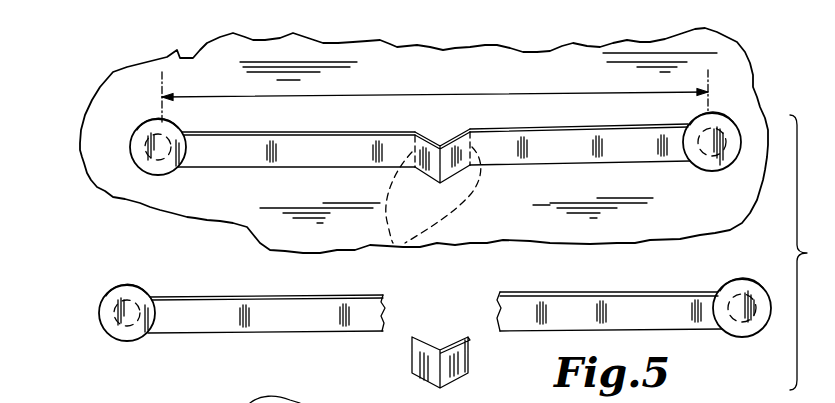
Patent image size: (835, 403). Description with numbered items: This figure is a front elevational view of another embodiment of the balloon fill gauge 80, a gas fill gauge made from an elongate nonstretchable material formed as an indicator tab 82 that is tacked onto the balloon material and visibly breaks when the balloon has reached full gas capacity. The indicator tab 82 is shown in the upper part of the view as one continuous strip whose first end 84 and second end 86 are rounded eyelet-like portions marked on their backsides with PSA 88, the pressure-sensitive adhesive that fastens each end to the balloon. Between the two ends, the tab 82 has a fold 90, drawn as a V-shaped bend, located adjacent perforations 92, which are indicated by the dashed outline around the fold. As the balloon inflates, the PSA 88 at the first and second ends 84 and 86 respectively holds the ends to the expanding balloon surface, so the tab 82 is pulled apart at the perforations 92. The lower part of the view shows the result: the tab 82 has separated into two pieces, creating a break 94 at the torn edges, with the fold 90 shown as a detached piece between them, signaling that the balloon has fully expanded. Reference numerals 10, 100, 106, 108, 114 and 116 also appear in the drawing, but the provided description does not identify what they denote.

The connector body / tab 10 is at (412, 65).
The balloon fill gauge 80 is at (428, 93).
The indicator tab 82 is at (337, 140).
The first end 84 is at (132, 141).
The second end 86 is at (730, 117).
The PSA 88 is at (133, 172).
The fold 90 is at (422, 134).
The perforations 92 is at (391, 243).
The break 94 is at (387, 312).
The connector 100 is at (230, 394).
The element 106 is at (460, 398).
The element 108 is at (285, 397).
The element 114 is at (343, 402).
The element 116 is at (386, 402).